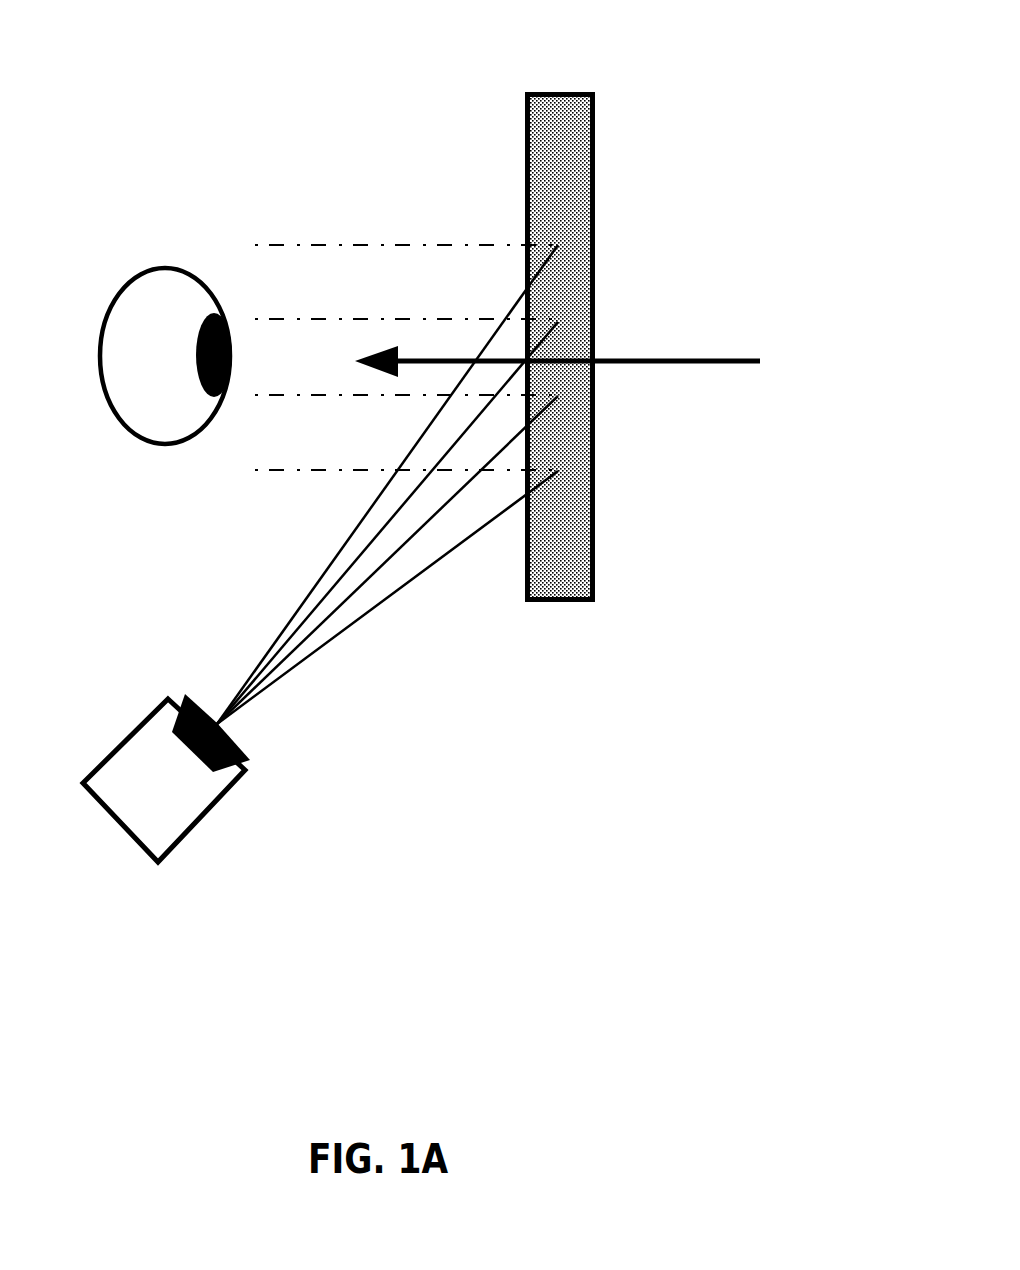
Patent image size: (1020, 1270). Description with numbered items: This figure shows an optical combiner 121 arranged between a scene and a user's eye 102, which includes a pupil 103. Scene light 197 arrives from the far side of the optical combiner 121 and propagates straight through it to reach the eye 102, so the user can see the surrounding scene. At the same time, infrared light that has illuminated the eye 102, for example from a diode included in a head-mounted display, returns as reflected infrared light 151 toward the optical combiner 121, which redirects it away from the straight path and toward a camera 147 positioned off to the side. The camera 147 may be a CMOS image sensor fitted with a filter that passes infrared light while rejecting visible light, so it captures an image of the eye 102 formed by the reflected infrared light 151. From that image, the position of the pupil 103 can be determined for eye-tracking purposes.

The reflected infrared light 151 is at (562, 84).
The eye 102 is at (139, 256).
The pupil 103 is at (203, 328).
The scene light 197 is at (600, 352).
The optical combiner 121 is at (558, 602).
The camera 147 is at (198, 827).